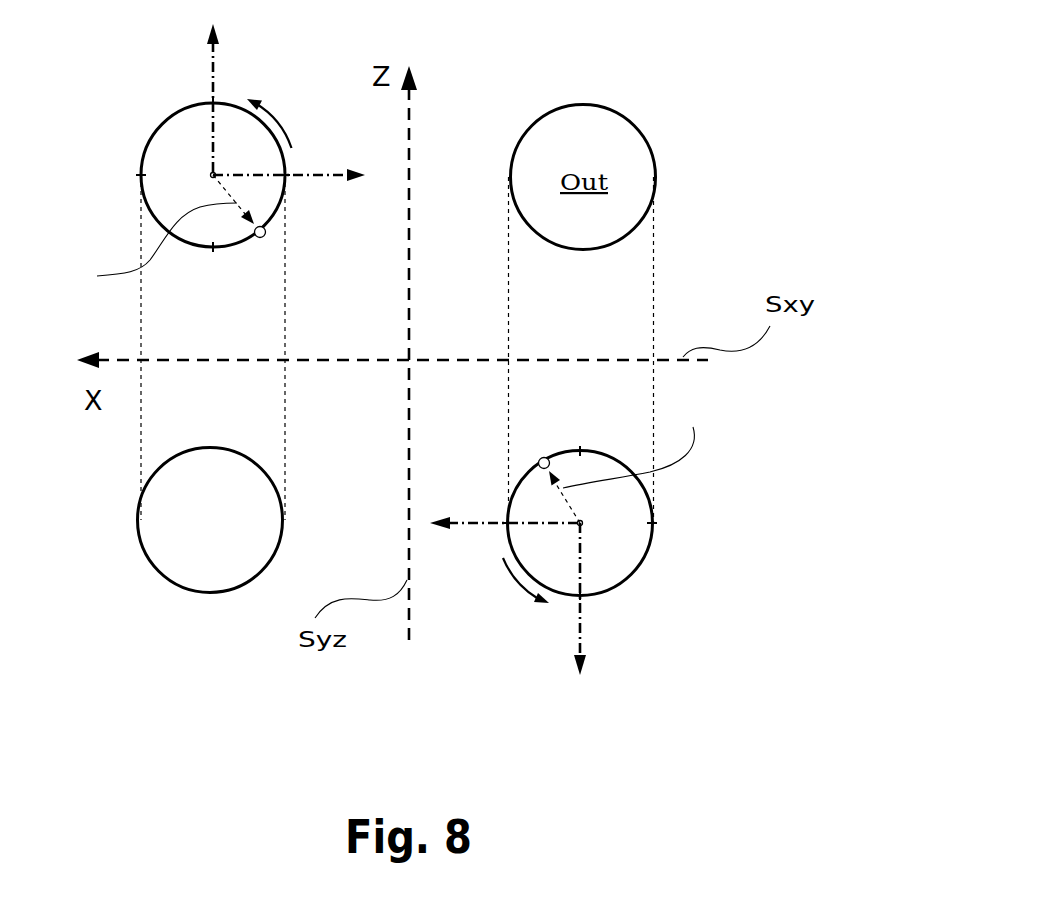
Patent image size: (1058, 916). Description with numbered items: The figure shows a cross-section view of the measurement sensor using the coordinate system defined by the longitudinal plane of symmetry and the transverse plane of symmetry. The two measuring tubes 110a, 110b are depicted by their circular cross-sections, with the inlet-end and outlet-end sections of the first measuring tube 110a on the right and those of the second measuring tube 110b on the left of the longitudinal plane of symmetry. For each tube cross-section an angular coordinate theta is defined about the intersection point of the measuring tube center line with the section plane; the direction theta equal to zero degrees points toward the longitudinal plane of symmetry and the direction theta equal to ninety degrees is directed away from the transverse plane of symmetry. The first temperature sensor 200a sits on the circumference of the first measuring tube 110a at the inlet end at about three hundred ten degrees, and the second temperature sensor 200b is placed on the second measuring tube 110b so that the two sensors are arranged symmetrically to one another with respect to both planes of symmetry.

The first measuring tube 110a is at (638, 573).
The second measuring tube 110b is at (138, 503).
The first temperature sensor 200a is at (540, 462).
The second temperature sensor 200b is at (266, 236).